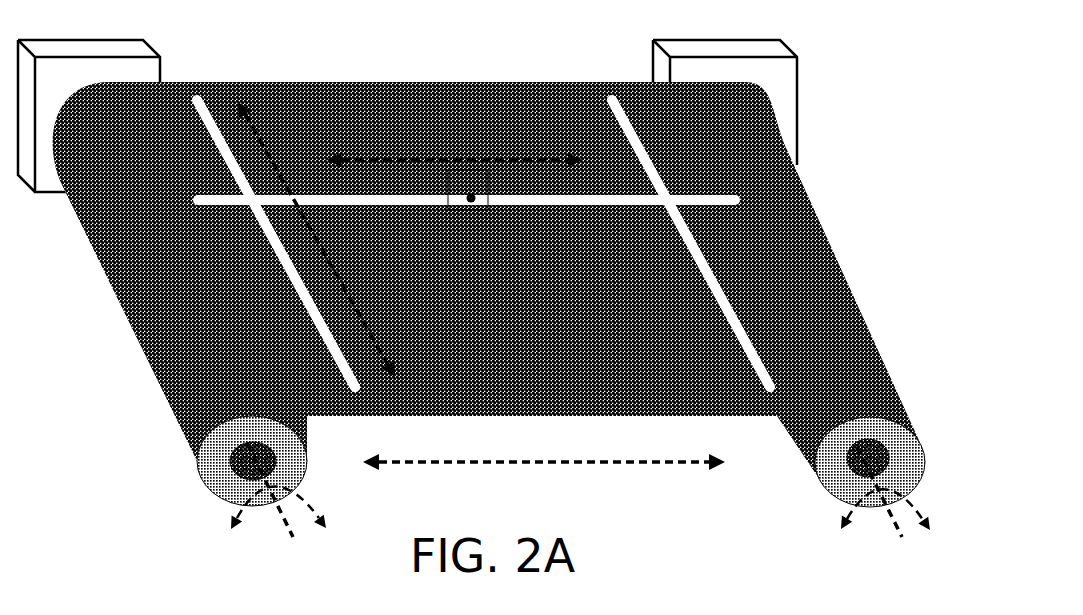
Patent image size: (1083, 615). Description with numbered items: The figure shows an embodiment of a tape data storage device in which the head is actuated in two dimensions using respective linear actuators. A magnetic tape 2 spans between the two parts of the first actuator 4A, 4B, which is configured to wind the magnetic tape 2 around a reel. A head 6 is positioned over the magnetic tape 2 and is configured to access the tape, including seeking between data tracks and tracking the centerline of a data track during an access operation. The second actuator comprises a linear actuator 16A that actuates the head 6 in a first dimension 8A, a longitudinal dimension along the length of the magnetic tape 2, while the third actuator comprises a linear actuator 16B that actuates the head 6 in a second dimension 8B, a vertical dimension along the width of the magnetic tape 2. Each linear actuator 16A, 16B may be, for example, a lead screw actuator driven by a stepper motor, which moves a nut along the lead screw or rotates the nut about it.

The magnetic tape 2 is at (140, 316).
The first actuator 4A is at (77, 48).
The first actuator 4B is at (722, 48).
The head 6 is at (495, 230).
The first dimension 8A is at (418, 155).
The second dimension 8B is at (339, 283).
The linear actuator 16A is at (600, 203).
The linear actuator 16B is at (296, 283).